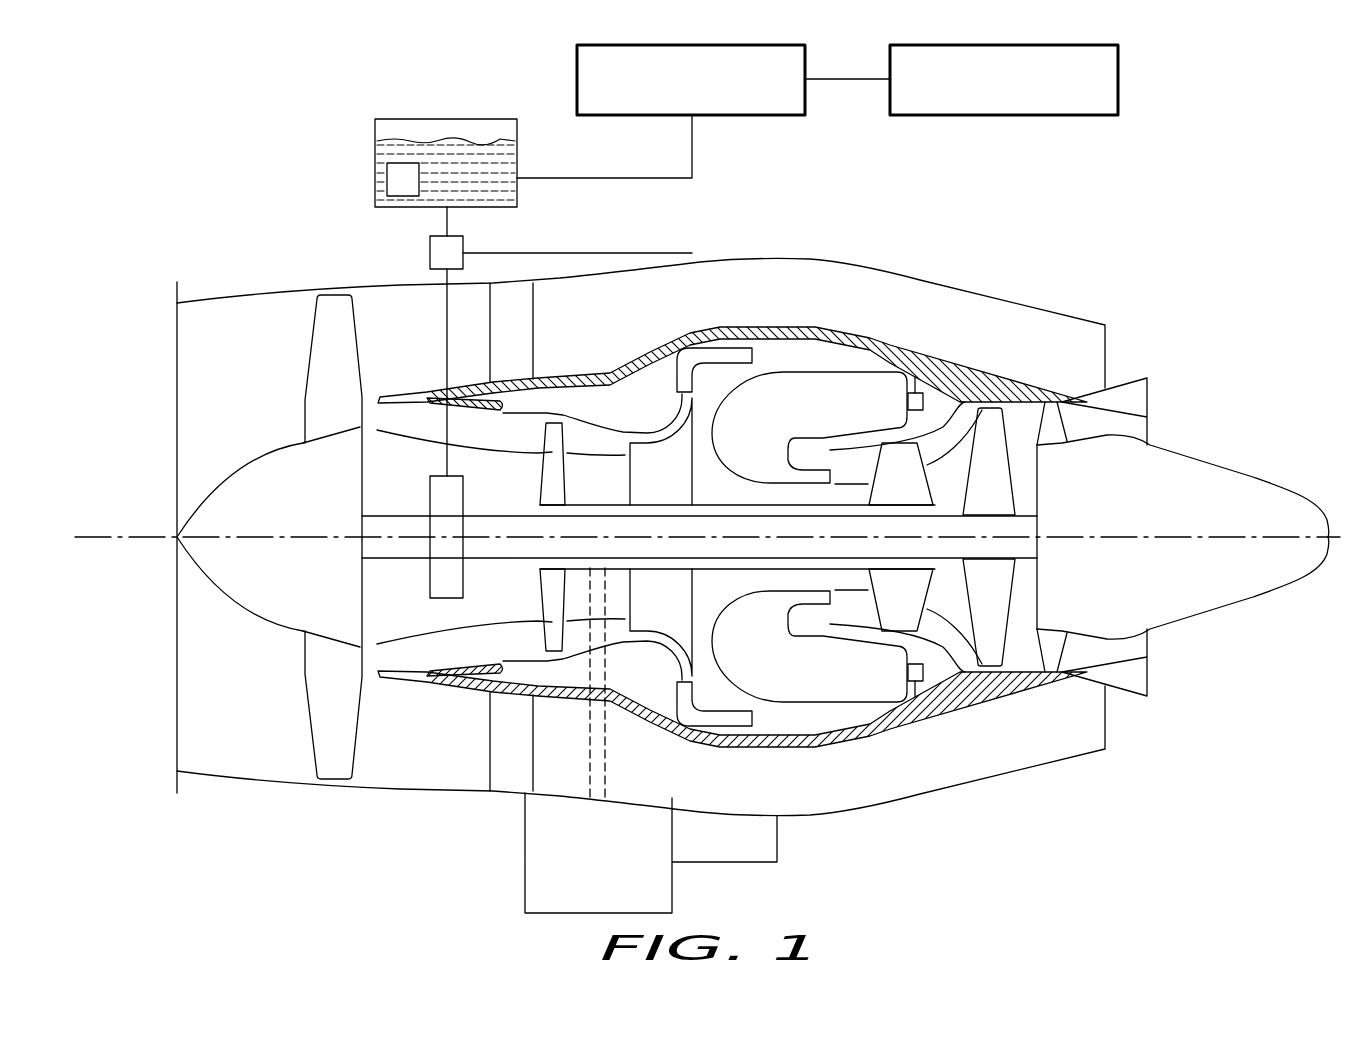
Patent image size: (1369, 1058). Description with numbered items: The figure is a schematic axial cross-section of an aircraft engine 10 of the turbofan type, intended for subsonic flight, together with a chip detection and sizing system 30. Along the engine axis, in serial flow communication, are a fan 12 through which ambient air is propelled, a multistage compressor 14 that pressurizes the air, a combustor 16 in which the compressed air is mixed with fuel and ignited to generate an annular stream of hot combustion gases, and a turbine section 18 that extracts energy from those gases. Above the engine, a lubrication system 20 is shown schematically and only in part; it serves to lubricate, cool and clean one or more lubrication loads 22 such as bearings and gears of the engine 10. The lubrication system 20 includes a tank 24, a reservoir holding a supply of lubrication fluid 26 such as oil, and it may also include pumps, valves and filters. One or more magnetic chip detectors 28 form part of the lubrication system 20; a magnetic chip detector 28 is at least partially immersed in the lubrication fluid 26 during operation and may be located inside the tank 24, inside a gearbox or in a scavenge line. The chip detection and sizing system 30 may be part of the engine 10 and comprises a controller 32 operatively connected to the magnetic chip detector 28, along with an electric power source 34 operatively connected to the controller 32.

The aircraft engine 10 is at (1001, 258).
The fan 12 is at (330, 694).
The multistage compressor 14 is at (613, 447).
The combustor 16 is at (812, 393).
The turbine section 18 is at (943, 607).
The lubrication system 20 is at (322, 163).
The lubrication loads 22 is at (430, 497).
The tank 24 is at (447, 119).
The lubrication fluid 26 is at (488, 160).
The magnetic chip detector 28 is at (440, 257).
The chip detection and sizing system 30 is at (1152, 107).
The controller 32 is at (743, 115).
The electric power source 34 is at (960, 115).